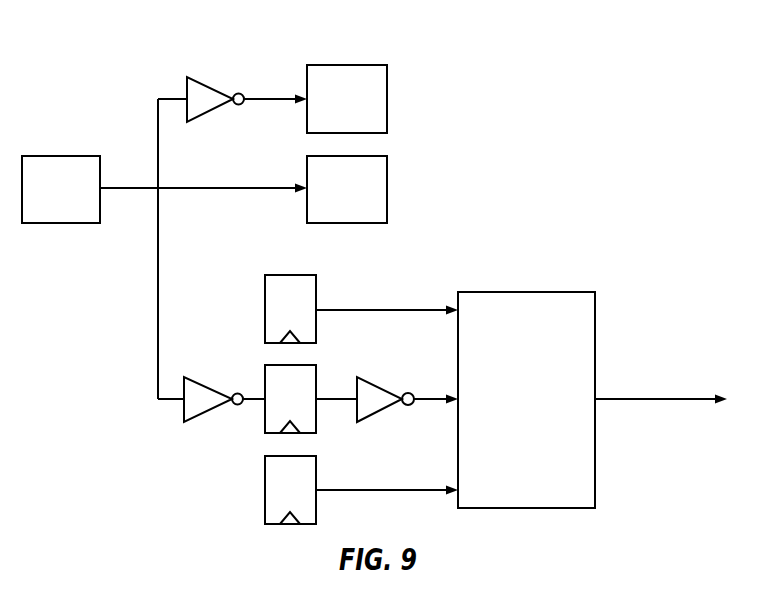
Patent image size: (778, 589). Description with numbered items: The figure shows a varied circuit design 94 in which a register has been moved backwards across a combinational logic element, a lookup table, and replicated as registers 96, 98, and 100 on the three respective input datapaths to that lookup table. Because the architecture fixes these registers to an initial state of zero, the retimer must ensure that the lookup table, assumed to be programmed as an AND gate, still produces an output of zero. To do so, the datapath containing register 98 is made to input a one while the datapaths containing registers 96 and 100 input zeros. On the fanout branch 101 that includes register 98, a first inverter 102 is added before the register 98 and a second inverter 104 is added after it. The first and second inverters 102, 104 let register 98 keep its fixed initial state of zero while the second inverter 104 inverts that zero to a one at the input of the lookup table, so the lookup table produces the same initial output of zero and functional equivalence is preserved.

The varied circuit design 94 is at (513, 50).
The register 96 is at (292, 275).
The register 98 is at (292, 365).
The register 100 is at (292, 456).
The fanout branch 101 is at (177, 406).
The first inverter 102 is at (204, 386).
The second inverter 104 is at (377, 387).